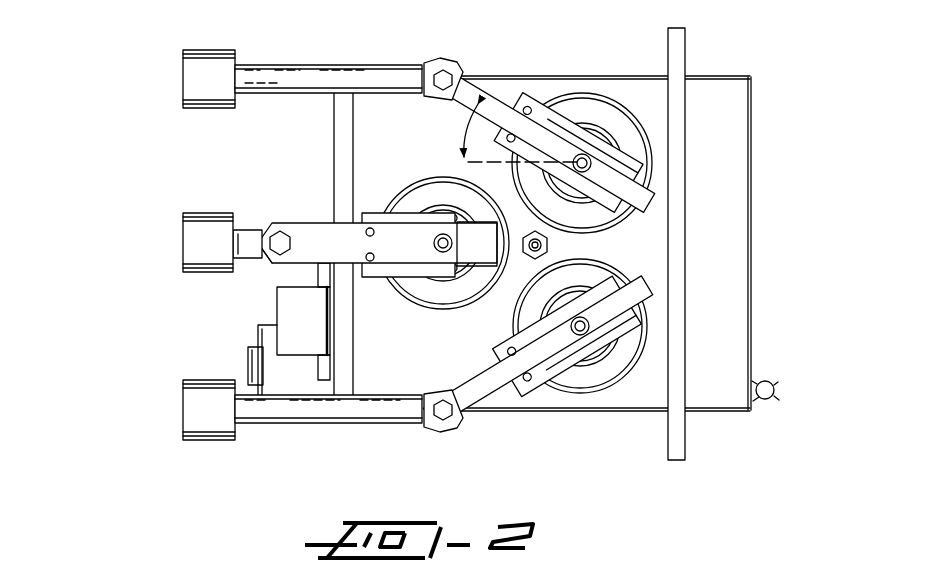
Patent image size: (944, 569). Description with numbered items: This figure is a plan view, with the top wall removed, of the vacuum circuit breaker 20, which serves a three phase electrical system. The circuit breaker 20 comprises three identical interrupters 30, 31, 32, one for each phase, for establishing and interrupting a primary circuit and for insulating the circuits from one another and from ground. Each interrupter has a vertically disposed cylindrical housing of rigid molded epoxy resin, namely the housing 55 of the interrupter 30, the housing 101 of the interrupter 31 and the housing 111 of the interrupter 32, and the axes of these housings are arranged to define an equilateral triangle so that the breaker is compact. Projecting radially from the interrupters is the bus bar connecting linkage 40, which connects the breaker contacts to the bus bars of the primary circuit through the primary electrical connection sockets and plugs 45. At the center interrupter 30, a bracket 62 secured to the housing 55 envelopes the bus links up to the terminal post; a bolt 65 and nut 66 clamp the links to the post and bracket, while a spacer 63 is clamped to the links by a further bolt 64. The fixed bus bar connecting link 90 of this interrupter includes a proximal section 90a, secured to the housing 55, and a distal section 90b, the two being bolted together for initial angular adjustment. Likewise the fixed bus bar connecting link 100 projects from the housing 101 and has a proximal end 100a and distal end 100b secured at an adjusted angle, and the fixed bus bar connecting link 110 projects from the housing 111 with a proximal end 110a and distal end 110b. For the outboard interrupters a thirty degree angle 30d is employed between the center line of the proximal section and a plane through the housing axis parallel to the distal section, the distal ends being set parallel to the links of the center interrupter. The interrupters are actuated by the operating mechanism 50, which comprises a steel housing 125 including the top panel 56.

The circuit breaker 20 is at (666, 278).
The interrupter 30 is at (397, 234).
The 30 degree angle 30d is at (462, 126).
The interrupter 31 is at (582, 121).
The interrupter 32 is at (626, 362).
The bus bar connecting linkage 40 is at (155, 138).
The primary electrical connection sockets and plugs 45 is at (213, 109).
The operating mechanism 50 is at (586, 414).
The cylindrical housing 55 is at (528, 231).
The top panel 56 is at (640, 84).
The bracket 62 is at (468, 162).
The spacer 63 is at (437, 246).
The bolt 64 is at (433, 243).
The bolt 65 is at (453, 273).
The nut 66 is at (450, 278).
The fixed bus bar connecting link 90 is at (340, 248).
The proximal section 90a is at (292, 258).
The distal section 90b is at (247, 230).
The fixed bus bar connecting link 100 is at (328, 51).
The proximal end 100a is at (470, 79).
The distal end 100b is at (268, 71).
The cylindrical housing 101 is at (588, 95).
The fixed bus bar connecting link 110 is at (337, 441).
The proximal end 110a is at (490, 397).
The distal end 110b is at (388, 424).
The cylindrical housing 111 is at (640, 358).
The housing 125 is at (752, 279).